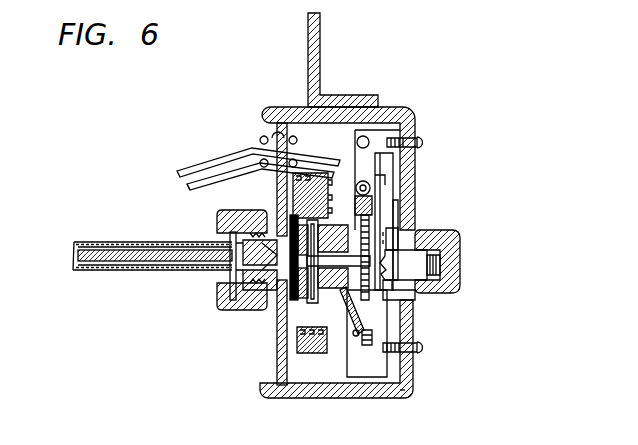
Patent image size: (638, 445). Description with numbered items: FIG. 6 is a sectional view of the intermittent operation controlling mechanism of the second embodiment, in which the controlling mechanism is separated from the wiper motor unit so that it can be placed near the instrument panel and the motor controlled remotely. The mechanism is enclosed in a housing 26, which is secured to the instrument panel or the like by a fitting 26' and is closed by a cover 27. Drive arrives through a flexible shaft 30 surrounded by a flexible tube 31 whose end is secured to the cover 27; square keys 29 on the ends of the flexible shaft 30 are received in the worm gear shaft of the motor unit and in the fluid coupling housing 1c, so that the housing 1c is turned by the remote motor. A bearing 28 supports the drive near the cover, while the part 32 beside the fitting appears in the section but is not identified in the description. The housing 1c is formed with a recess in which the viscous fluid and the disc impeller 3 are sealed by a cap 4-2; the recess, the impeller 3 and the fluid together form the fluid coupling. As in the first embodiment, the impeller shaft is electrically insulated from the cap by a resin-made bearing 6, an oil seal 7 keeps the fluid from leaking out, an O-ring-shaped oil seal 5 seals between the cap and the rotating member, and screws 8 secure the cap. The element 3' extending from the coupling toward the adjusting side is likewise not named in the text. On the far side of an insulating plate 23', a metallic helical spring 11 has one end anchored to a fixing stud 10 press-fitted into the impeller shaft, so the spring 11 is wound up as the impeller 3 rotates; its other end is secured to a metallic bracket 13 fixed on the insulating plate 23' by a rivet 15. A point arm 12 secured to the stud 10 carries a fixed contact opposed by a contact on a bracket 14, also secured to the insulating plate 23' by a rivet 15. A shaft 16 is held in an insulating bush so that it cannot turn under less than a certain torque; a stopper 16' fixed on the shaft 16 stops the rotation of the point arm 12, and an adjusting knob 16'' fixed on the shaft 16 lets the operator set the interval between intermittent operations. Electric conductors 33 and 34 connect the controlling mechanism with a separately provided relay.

The fitting 26' is at (343, 60).
The housing 26 is at (337, 270).
The cover 27 is at (277, 370).
The fluid coupling housing 1c is at (315, 377).
The flexible tube 31 is at (96, 272).
The flexible shaft 30 is at (150, 262).
The square keys 29 is at (232, 240).
The lower nut 32 is at (222, 305).
The bearing 28 is at (262, 300).
The oil seal 5 is at (295, 300).
The bearing 6 is at (330, 240).
The screws 8 is at (293, 186).
The electric conductor 33 is at (214, 163).
The electric conductor 34 is at (187, 187).
The bracket 14 is at (375, 160).
The point arm 12 is at (395, 195).
The stopper 16' is at (429, 168).
The helical spring 11 is at (398, 220).
The fixing stud 10 is at (398, 236).
The adjusting knob 16'' is at (470, 261).
The shaft 16 is at (469, 272).
The stem 3' is at (383, 283).
The cap 4-2 is at (385, 300).
The rivet 15 is at (412, 138).
The bracket 13 is at (368, 377).
The insulating plate 23' is at (430, 406).
The oil seal 7 is at (369, 288).
The impeller 3 is at (341, 311).